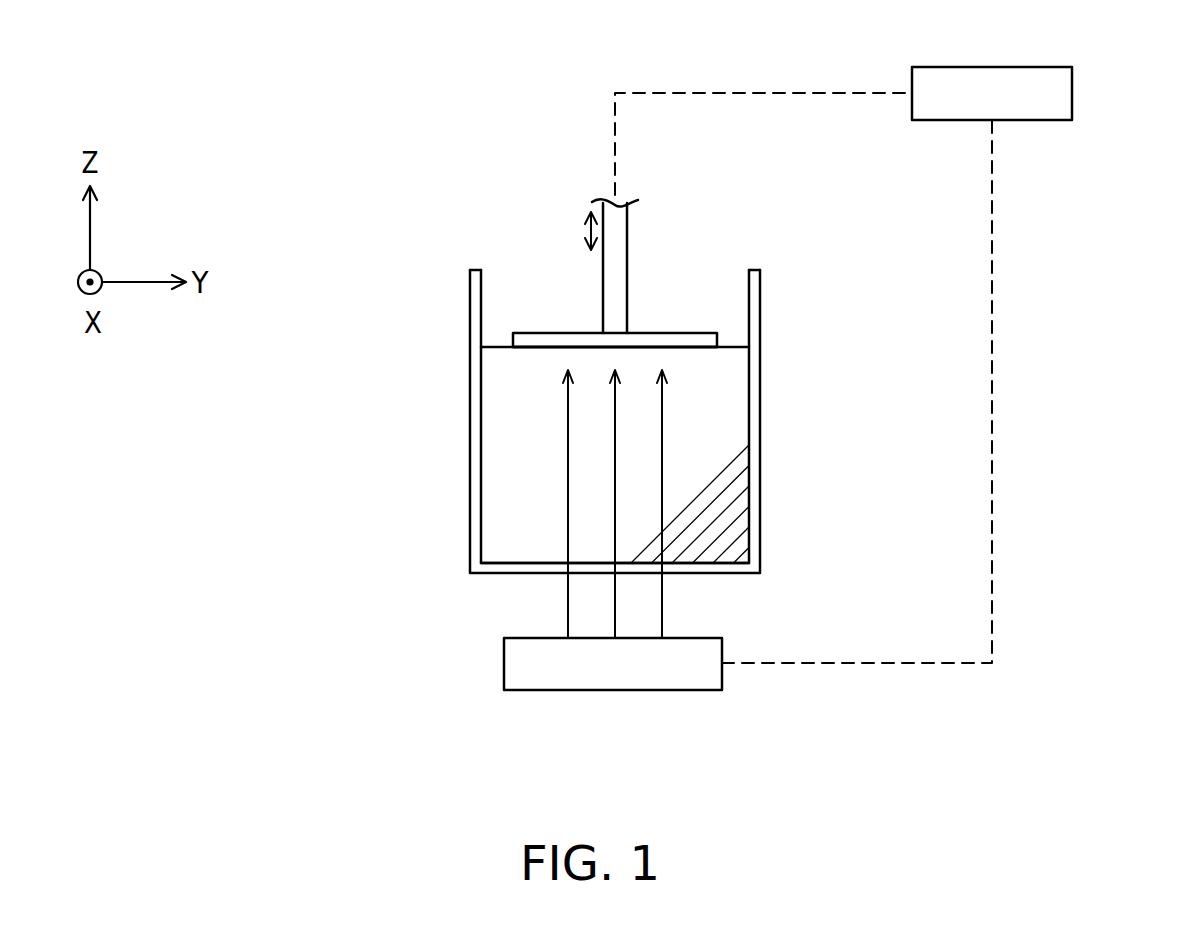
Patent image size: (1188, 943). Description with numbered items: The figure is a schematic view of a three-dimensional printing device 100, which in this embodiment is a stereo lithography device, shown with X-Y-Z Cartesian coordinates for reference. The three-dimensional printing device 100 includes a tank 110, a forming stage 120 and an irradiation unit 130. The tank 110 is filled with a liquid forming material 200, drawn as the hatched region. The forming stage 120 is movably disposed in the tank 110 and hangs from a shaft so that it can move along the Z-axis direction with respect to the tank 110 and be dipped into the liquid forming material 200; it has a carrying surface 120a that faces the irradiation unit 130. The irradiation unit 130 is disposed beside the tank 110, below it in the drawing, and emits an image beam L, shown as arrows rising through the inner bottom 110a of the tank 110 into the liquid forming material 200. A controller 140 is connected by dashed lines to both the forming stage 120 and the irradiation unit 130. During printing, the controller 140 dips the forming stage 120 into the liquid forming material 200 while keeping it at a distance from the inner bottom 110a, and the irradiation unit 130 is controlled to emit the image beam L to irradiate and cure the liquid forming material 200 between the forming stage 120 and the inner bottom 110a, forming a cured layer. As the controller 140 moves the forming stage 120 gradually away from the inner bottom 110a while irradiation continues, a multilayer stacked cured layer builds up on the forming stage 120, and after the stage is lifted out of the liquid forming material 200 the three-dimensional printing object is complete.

The three-dimensional printing device 100 is at (1119, 759).
The tank 110 is at (752, 465).
The inner bottom of the tank 110a is at (685, 562).
The forming stage 120 is at (659, 337).
The carrying surface 120a is at (690, 361).
The irradiation unit 130 is at (650, 690).
The controller 140 is at (1072, 93).
The liquid forming material 200 is at (732, 413).
The image beam L is at (661, 607).